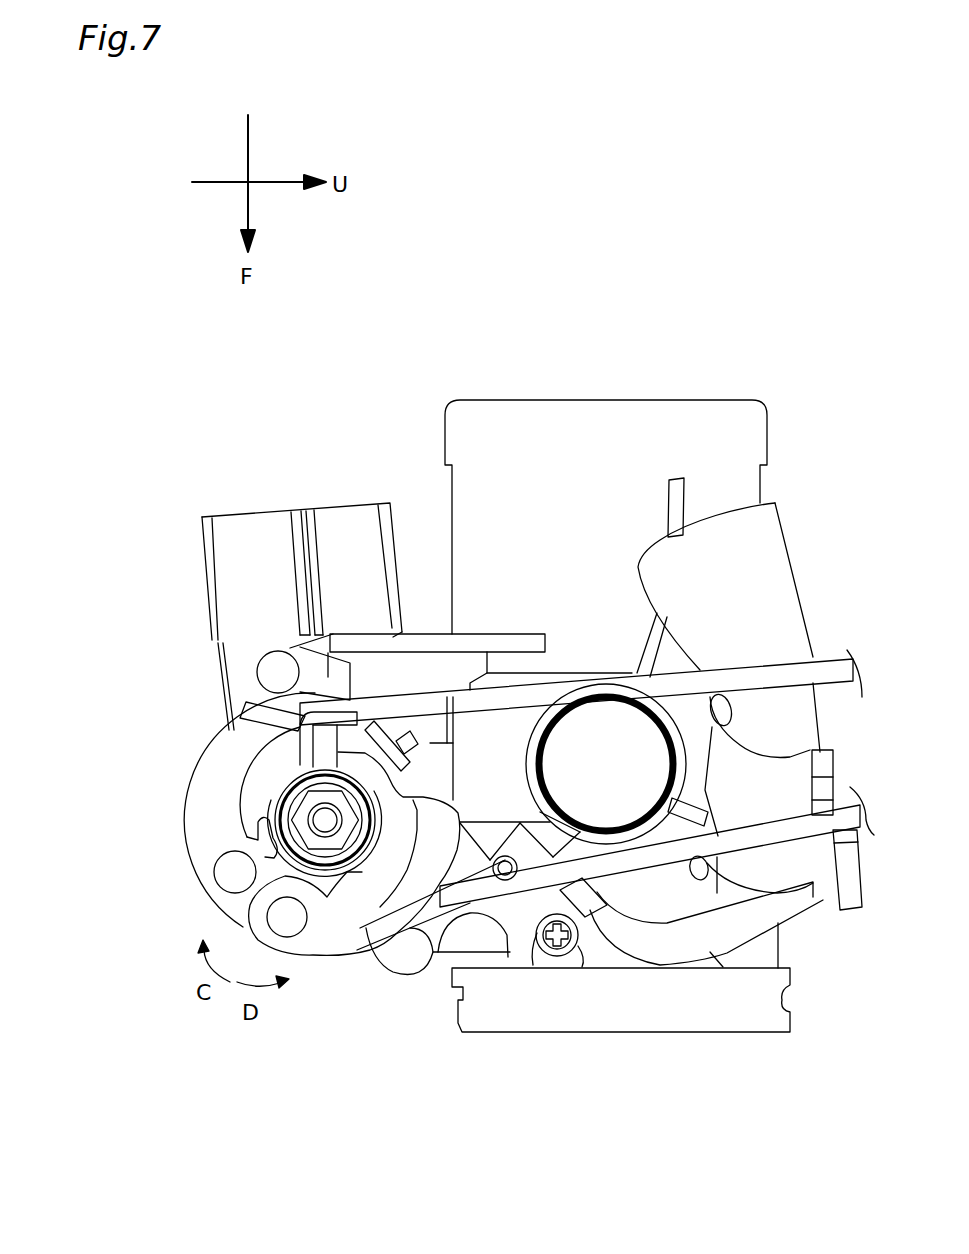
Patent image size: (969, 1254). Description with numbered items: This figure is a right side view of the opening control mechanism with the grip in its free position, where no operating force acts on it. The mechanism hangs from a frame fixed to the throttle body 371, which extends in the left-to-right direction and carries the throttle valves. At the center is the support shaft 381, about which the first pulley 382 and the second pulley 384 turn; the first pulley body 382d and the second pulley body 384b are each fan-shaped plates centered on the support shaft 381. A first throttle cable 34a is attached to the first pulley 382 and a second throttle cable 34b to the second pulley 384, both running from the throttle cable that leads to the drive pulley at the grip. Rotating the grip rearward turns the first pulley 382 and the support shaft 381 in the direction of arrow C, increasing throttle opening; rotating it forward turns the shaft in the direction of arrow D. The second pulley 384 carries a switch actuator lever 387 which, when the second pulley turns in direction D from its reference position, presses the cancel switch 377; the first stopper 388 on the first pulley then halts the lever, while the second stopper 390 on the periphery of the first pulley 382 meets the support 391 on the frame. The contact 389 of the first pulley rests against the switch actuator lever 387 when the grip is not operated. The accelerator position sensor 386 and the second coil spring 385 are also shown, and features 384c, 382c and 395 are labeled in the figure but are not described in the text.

The throttle body 371 is at (592, 440).
The first throttle cable 34a is at (590, 695).
The second throttle cable 34b is at (628, 858).
The accelerator position sensor 386 is at (325, 580).
The second stopper 390 is at (330, 673).
The support 391 is at (285, 674).
The second coil spring 385 is at (247, 703).
The hook portion of lever 384c is at (297, 730).
The pin of cam plate 382c is at (380, 735).
The first pulley 382 is at (222, 763).
The first pulley body 382d is at (215, 848).
The support shaft 381 is at (322, 820).
The second pulley 384 is at (383, 917).
The second pulley body 384b is at (332, 937).
The contact 389 is at (383, 960).
The switch actuator lever 387 is at (447, 937).
The cancel switch 377 is at (483, 870).
The first stopper 388 is at (463, 873).
The fixing screw 395 is at (563, 898).